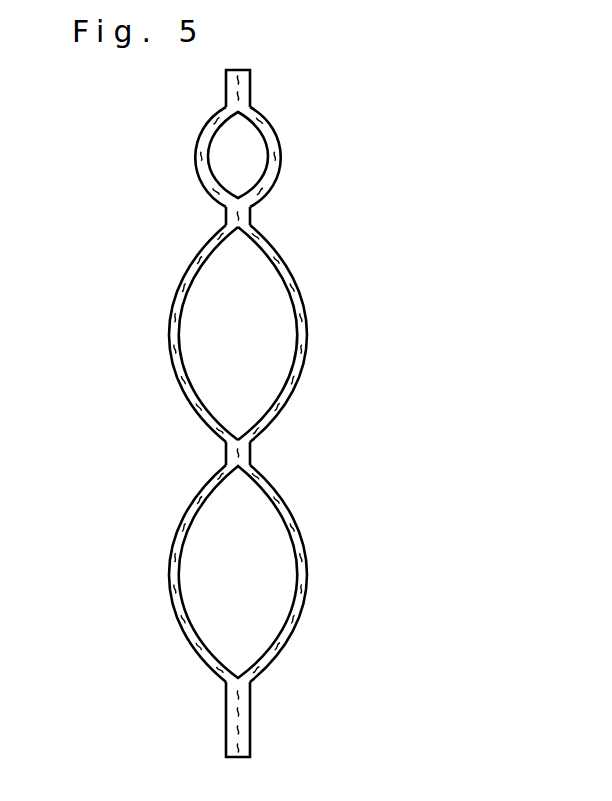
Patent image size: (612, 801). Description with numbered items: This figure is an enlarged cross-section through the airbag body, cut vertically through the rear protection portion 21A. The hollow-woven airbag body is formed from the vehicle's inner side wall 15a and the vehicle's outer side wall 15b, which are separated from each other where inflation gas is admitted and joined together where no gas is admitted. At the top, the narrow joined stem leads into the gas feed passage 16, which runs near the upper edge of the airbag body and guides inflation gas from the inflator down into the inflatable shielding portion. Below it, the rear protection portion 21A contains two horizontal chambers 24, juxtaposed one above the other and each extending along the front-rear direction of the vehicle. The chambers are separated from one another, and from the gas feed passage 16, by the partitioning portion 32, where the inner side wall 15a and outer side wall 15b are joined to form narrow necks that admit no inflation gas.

The partitioning portion 32 is at (250, 87).
The gas feed passage 16 is at (280, 152).
The horizontal chamber 24 is at (293, 265).
The vehicle's outer side wall 15b is at (170, 312).
The vehicle's inner side wall 15a is at (305, 310).
The rear protection portion 21A is at (316, 597).